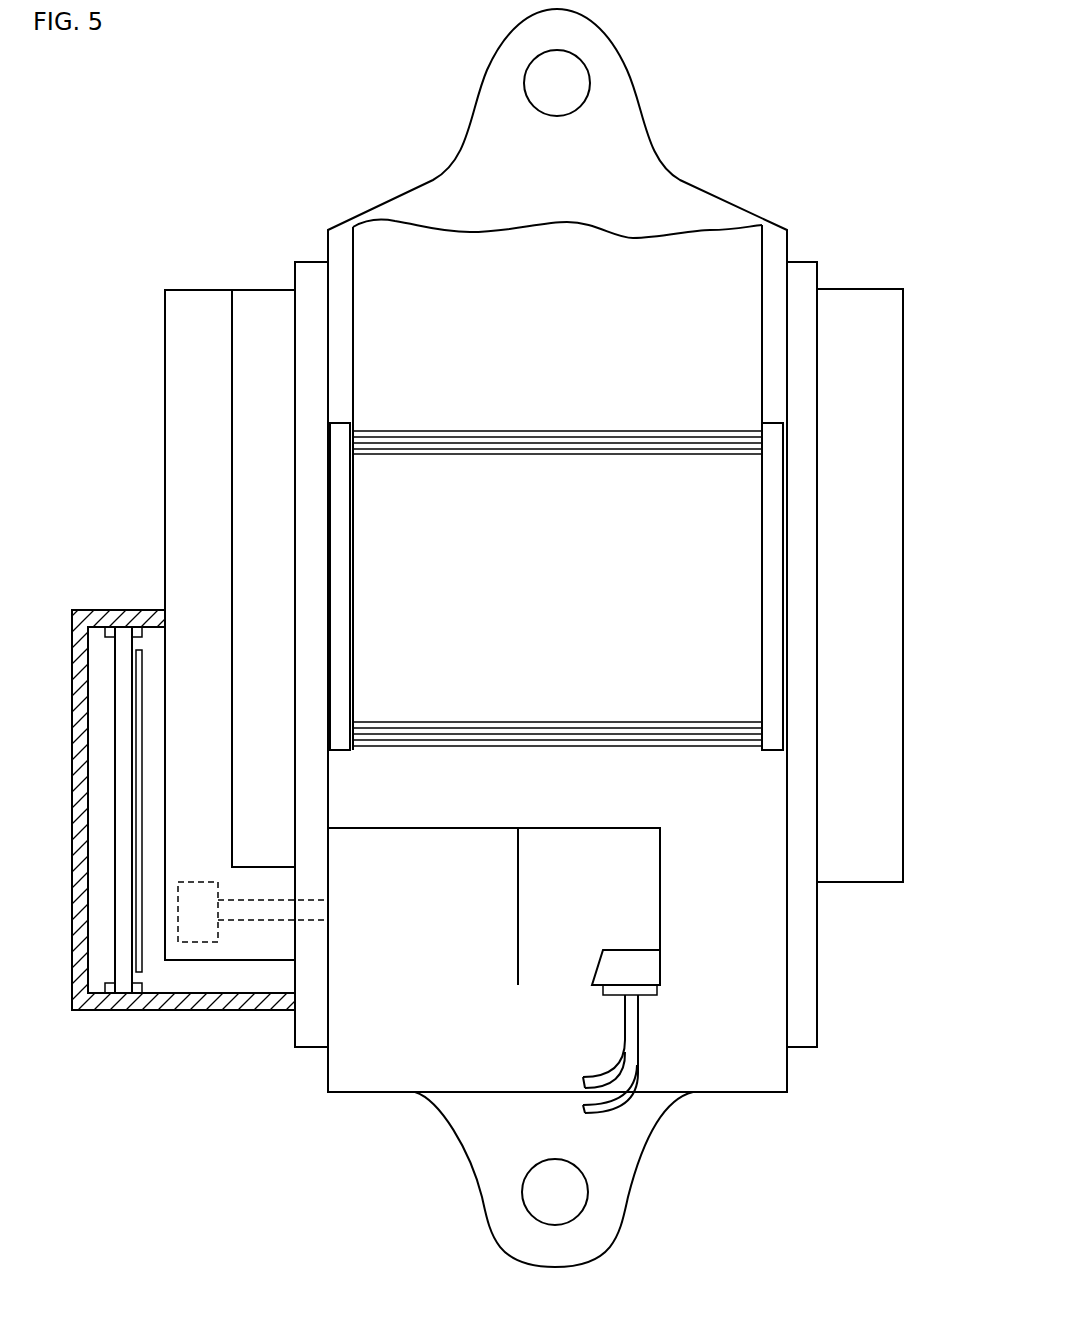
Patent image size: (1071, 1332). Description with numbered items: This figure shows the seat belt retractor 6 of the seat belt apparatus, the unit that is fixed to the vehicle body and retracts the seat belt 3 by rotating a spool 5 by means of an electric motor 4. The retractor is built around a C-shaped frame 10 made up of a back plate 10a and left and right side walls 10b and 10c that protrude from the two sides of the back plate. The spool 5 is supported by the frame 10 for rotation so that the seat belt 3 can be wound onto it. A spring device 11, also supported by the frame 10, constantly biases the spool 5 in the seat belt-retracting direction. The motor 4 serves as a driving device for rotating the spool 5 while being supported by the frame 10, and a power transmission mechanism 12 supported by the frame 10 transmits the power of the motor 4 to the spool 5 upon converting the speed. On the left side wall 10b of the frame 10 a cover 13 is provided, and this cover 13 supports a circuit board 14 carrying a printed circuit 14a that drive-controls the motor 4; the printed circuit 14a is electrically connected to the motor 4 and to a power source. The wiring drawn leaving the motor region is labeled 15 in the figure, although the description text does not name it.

The seat belt 3 is at (607, 253).
The electric motor 4 is at (672, 940).
The spool 5 is at (568, 606).
The seat belt retractor 6 is at (296, 218).
The frame 10 is at (686, 205).
The back plate 10a is at (458, 1050).
The left side wall 10b is at (308, 1010).
The right side wall 10c is at (805, 1008).
The spring device 11 is at (262, 298).
The power transmission mechanism 12 is at (197, 298).
The cover 13 is at (178, 997).
The circuit board 14 is at (122, 940).
The printed circuit 14a is at (137, 683).
The wire harness 15 is at (610, 1047).